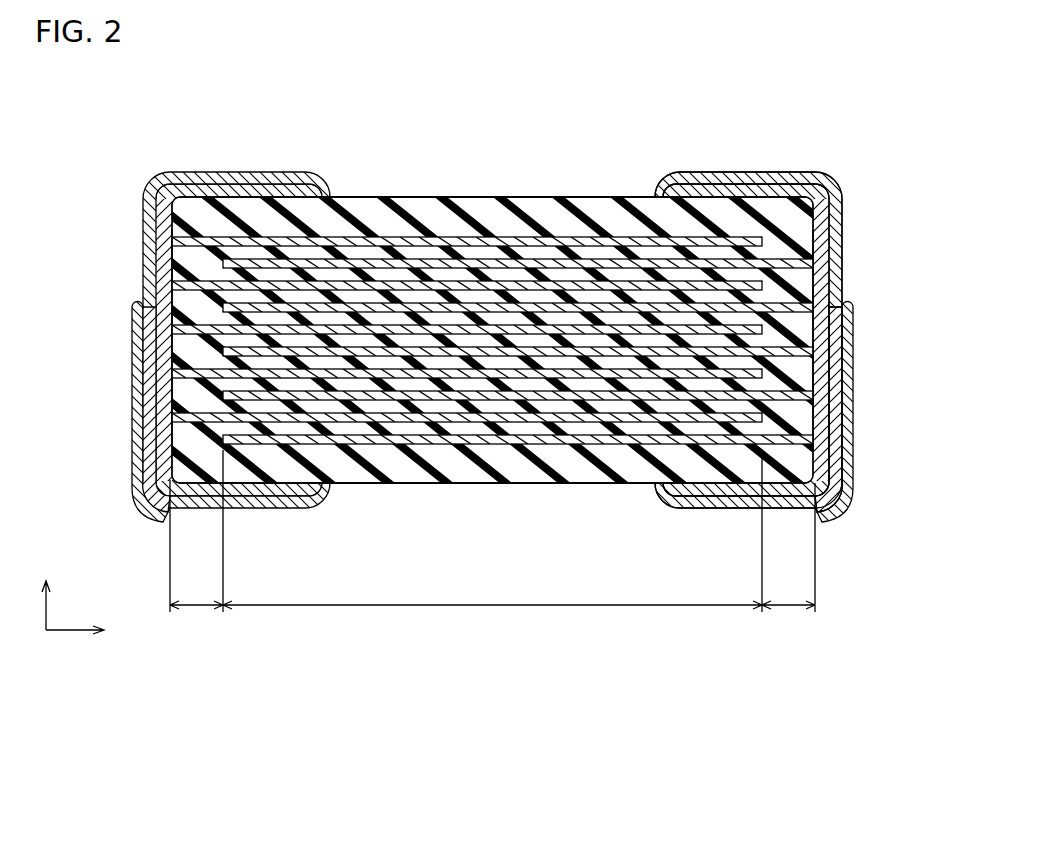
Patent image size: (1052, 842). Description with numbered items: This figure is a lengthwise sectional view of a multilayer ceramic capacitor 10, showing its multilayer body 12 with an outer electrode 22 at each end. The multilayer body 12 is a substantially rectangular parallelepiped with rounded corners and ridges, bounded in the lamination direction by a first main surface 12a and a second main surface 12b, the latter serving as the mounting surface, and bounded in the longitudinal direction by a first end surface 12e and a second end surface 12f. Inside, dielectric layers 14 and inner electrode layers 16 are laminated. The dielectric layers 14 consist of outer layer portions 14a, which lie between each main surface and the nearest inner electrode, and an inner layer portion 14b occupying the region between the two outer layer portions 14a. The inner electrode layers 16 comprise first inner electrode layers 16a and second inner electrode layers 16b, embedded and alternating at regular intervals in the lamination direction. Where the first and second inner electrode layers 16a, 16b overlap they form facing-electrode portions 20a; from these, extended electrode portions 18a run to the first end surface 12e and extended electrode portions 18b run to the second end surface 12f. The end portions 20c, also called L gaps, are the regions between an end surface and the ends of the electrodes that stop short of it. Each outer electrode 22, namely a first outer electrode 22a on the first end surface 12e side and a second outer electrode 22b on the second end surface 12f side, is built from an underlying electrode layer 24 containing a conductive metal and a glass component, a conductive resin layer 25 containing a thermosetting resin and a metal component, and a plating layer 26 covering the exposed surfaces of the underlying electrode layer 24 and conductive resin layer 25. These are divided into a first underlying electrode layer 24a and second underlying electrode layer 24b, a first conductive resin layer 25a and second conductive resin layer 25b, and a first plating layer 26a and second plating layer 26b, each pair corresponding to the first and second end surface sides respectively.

The multilayer ceramic capacitor 10 is at (364, 100).
The multilayer body 12 is at (526, 335).
The first main surface 12a is at (407, 196).
The second main surface 12b is at (412, 484).
The first end surface 12e is at (172, 307).
The second end surface 12f is at (815, 232).
The dielectric layers 14 is at (525, 140).
The outer layer portions 14a is at (577, 222).
The inner layer portion 14b is at (640, 275).
The inner electrode layers 16 is at (425, 453).
The first inner electrode layers 16a is at (355, 330).
The second inner electrode layers 16b is at (445, 352).
The extended electrode portions 18a is at (172, 287).
The extended electrode portions 18b is at (813, 350).
The facing-electrode portions 20a is at (492, 531).
The end portions 20c is at (492, 546).
The outer electrode 22 is at (490, 435).
The first outer electrode 22a is at (184, 317).
The second outer electrode 22b is at (799, 317).
The underlying electrode layer 24 is at (641, 672).
The first underlying electrode layer 24a is at (255, 190).
The second underlying electrode layer 24b is at (728, 190).
The conductive resin layer 25 is at (772, 672).
The first conductive resin layer 25a is at (150, 436).
The second conductive resin layer 25b is at (836, 364).
The plating layer 26 is at (800, 466).
The first plating layer 26a is at (209, 177).
The second plating layer 26b is at (777, 177).